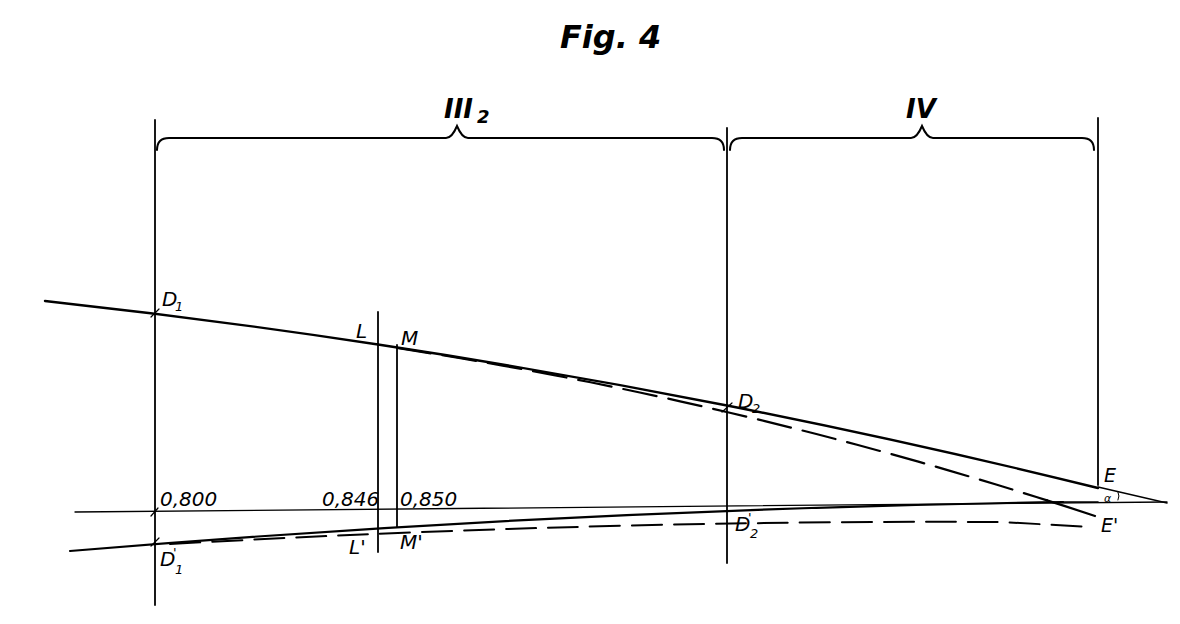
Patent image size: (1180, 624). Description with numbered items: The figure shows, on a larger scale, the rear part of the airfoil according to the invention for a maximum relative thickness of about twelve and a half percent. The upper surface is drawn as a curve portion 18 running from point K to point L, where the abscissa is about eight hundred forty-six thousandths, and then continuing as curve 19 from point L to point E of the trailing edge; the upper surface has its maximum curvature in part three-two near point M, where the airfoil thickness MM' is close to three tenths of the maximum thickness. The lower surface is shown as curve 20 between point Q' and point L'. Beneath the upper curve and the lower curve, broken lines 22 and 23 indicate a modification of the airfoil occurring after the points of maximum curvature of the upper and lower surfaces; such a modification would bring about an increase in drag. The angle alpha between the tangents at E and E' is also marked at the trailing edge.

The curve portion 18 is at (279, 327).
The curve 19 is at (611, 386).
The broken line 22 is at (828, 441).
The curve 20 is at (281, 538).
The broken line 23 is at (851, 525).